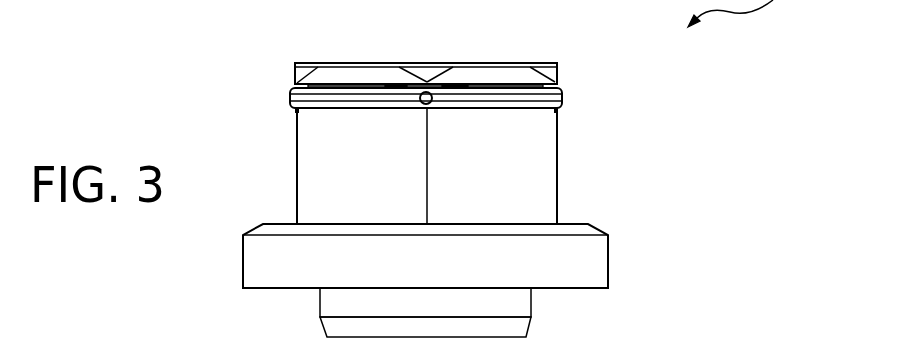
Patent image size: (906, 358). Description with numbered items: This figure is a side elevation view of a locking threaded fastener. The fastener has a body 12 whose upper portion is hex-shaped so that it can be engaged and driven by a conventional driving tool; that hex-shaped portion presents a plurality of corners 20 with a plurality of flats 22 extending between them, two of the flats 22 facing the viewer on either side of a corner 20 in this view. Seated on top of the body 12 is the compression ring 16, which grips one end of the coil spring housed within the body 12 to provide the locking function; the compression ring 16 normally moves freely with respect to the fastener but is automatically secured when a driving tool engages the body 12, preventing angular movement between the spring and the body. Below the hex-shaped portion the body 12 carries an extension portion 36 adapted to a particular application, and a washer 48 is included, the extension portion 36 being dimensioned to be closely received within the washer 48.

The body 12 is at (572, 153).
The compression ring 16 is at (575, 100).
The corners 20 is at (427, 185).
The flats 22 is at (338, 137).
The extension portion 36 is at (531, 304).
The washer 48 is at (625, 262).